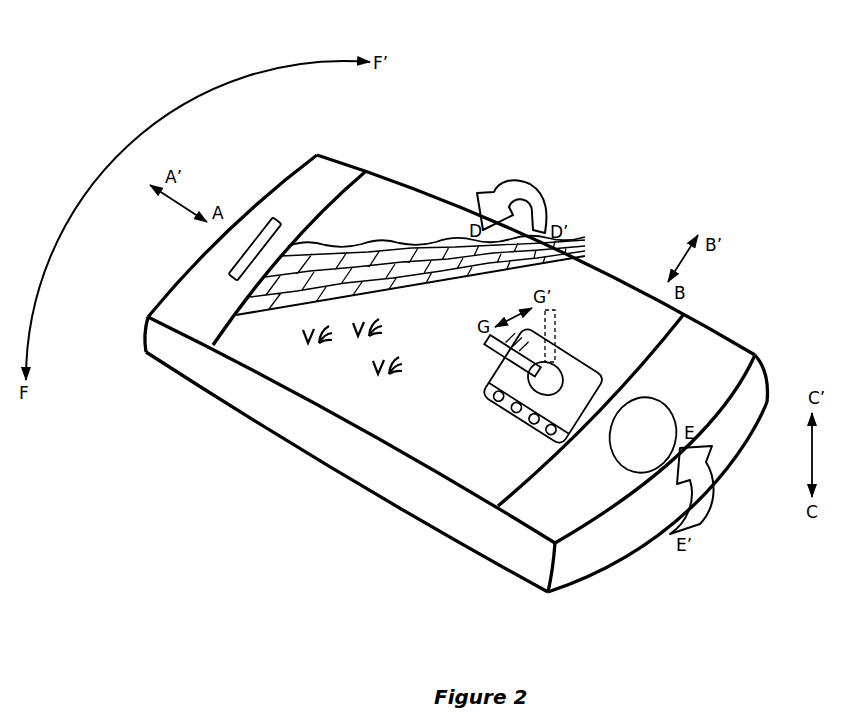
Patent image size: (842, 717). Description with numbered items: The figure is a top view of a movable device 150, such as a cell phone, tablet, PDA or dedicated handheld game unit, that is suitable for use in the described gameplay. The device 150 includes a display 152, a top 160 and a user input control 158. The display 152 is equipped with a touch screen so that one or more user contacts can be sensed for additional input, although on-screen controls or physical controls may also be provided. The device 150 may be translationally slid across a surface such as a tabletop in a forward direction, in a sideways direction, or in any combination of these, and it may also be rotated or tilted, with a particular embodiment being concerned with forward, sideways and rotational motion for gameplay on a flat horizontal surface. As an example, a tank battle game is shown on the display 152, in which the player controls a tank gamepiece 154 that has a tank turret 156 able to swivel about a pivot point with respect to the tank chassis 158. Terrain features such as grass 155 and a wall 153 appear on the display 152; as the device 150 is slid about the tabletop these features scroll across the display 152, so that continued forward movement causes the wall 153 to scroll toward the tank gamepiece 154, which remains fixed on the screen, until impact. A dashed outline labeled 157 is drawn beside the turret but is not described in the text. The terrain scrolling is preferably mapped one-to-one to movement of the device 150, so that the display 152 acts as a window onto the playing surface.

The device 150 is at (710, 141).
The display 152 is at (393, 213).
The wall 153 is at (400, 290).
The tank gamepiece 154 is at (536, 387).
The grass 155 is at (346, 370).
The tank turret 156 is at (497, 355).
The barrel target position (dashed) 157 is at (558, 322).
The user input control 158 is at (584, 368).
The top 160 is at (329, 197).